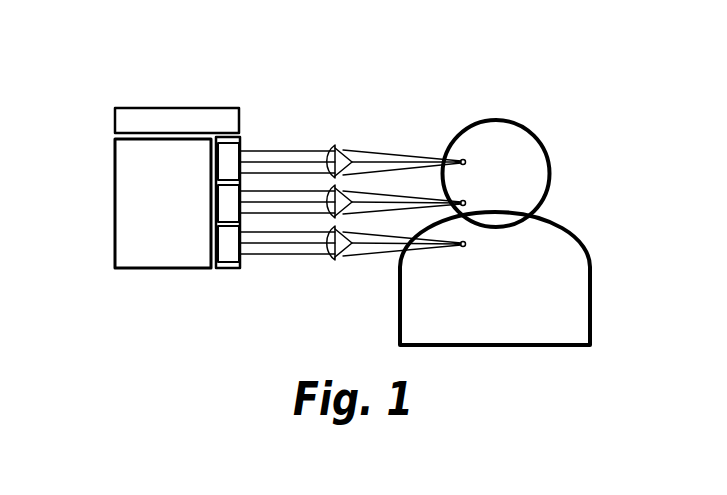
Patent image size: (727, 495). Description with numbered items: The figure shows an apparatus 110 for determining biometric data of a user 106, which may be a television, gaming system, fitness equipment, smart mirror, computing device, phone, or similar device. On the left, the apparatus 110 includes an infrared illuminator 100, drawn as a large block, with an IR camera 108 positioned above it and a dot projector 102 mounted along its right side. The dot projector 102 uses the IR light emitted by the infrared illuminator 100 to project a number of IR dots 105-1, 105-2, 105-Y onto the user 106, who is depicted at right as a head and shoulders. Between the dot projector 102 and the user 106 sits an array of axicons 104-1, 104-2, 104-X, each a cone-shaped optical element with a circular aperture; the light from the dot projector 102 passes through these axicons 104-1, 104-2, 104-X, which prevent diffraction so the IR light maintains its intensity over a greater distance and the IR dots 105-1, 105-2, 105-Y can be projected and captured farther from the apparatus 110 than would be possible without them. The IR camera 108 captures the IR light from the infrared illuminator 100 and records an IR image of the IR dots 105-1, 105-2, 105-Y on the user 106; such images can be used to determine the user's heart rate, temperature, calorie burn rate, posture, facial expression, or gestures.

The apparatus 110 is at (133, 50).
The infrared illuminator 100 is at (127, 203).
The IR camera 108 is at (127, 122).
The dot projector 102 is at (229, 272).
The axicon 104-1 is at (337, 143).
The axicon 104-2 is at (343, 197).
The axicon 104-X is at (341, 262).
The IR dot 105-1 is at (466, 162).
The IR dot 105-2 is at (466, 203).
The IR dot 105-Y is at (466, 244).
The user 106 is at (577, 290).